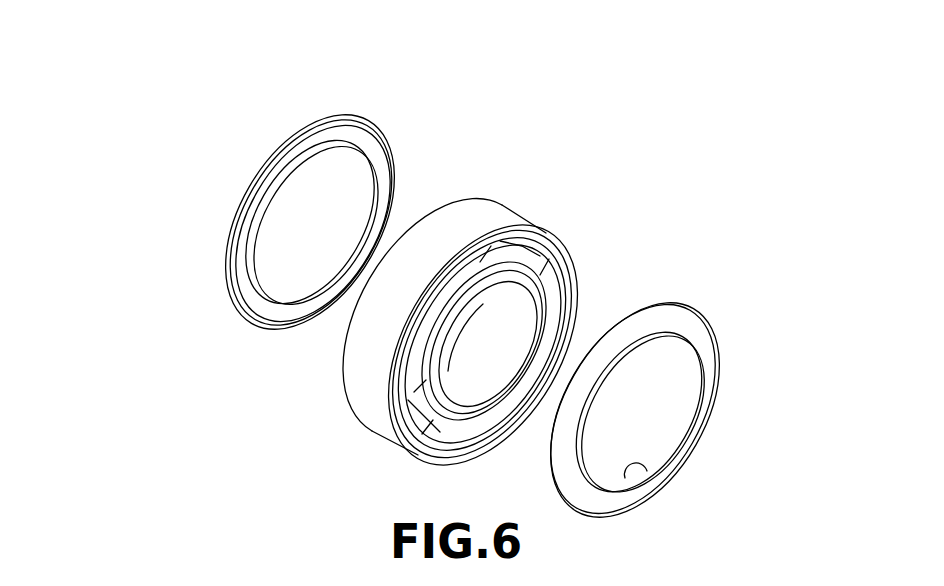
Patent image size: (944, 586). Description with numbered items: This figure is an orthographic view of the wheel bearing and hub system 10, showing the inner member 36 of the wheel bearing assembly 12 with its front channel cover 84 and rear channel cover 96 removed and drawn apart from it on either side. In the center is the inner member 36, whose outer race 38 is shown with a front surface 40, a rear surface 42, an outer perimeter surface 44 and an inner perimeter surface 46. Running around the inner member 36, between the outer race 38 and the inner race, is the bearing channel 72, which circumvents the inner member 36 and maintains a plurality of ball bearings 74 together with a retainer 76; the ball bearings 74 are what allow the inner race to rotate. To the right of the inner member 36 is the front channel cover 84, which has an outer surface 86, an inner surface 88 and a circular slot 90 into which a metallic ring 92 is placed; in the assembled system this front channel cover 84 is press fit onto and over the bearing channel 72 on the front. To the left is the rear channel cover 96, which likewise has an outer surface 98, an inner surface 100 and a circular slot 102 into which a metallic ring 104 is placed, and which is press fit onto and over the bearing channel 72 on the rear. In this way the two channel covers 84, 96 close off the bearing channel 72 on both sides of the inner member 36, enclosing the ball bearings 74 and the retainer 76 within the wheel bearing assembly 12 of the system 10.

The bearing and housing assembly 10 is at (126, 92).
The wheel bearing assembly 12 is at (458, 291).
The inner member 36 is at (648, 206).
The outer race 38 is at (458, 291).
The outer perimeter surface 44 is at (363, 367).
The front surface 40 is at (380, 420).
The rear surface 42 is at (358, 325).
The inner perimeter surface 46 is at (424, 458).
The bearing channel 72 is at (587, 273).
The ball bearings 74 is at (498, 253).
The retainer 76 is at (533, 248).
The front channel cover 84 is at (689, 421).
The outer surface 86 is at (711, 358).
The inner surface 88 is at (716, 427).
The circular slot 90 is at (685, 515).
The metallic ring 92 is at (626, 472).
The rear channel cover 96 is at (233, 184).
The inner surface 100 is at (358, 116).
The outer surface 98 is at (283, 132).
The circular slot 102 is at (221, 222).
The metallic ring 104 is at (260, 190).